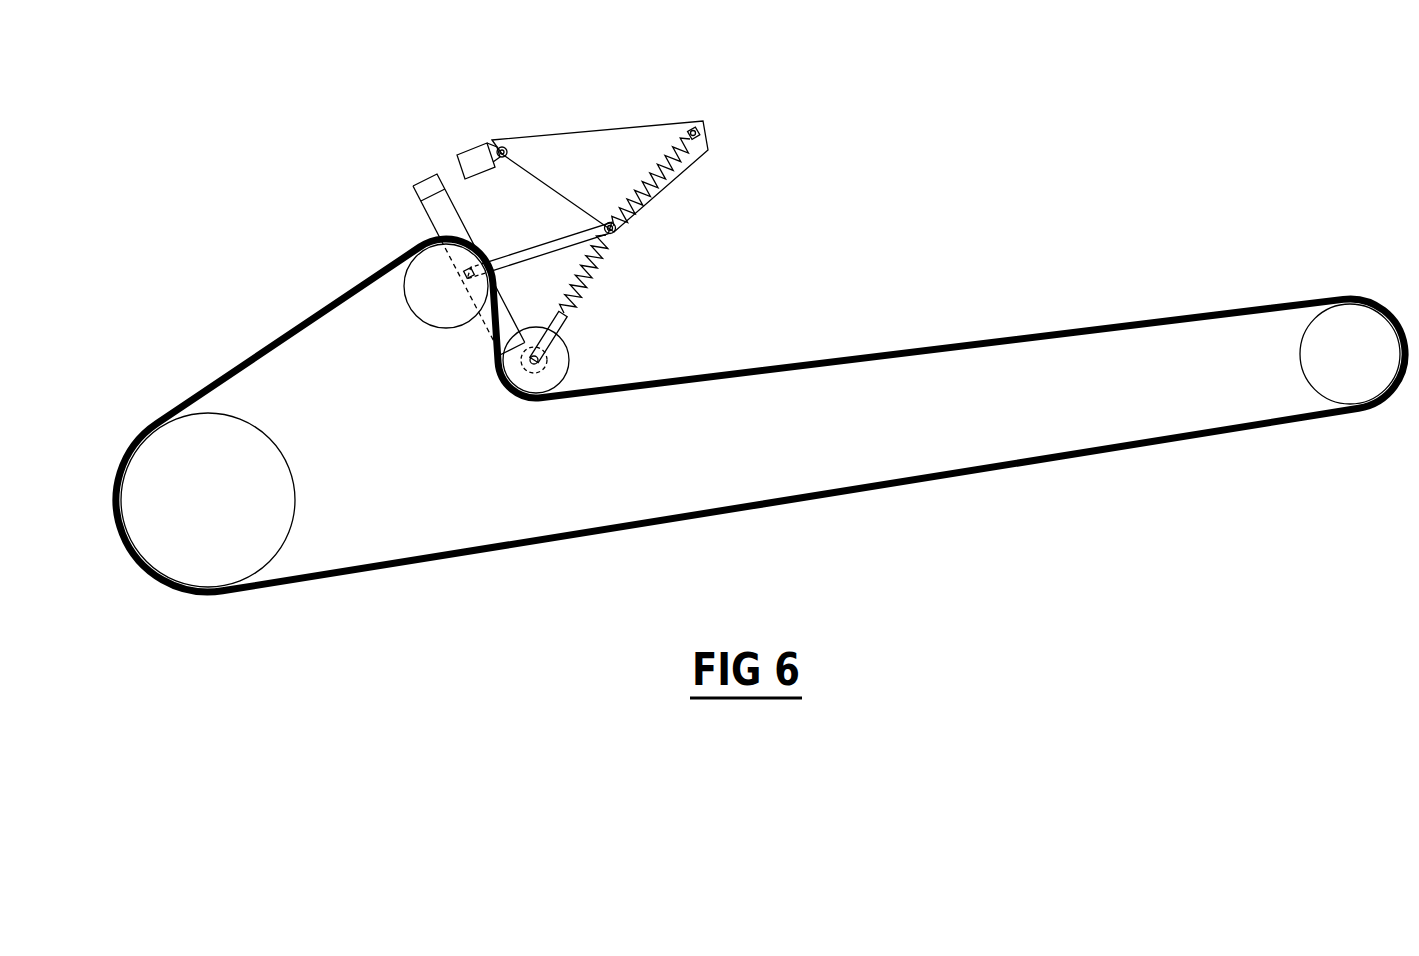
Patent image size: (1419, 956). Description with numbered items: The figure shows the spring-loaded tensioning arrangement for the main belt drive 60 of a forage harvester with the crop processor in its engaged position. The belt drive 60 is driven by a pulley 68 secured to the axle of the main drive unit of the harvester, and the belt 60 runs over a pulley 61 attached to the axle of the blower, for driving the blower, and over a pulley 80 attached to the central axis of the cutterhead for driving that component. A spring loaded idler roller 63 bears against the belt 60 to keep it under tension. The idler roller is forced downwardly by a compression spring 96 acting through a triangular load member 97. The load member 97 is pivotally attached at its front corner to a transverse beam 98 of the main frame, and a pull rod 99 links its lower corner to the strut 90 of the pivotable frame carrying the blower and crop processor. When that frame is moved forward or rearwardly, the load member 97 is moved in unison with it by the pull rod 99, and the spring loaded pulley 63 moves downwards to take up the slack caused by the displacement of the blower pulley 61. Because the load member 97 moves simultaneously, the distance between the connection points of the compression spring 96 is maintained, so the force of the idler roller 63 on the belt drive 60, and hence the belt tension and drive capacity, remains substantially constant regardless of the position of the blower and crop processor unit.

The main belt drive 60 is at (903, 482).
The pulley 61 is at (430, 302).
The spring loaded idler roller 63 is at (562, 368).
The pulley 68 is at (1350, 323).
The pulley 80 is at (212, 562).
The strut 90 is at (433, 212).
The compression spring 96 is at (640, 238).
The triangular load member 97 is at (650, 133).
The transverse beam 98 is at (478, 158).
The pull rod 99 is at (528, 247).